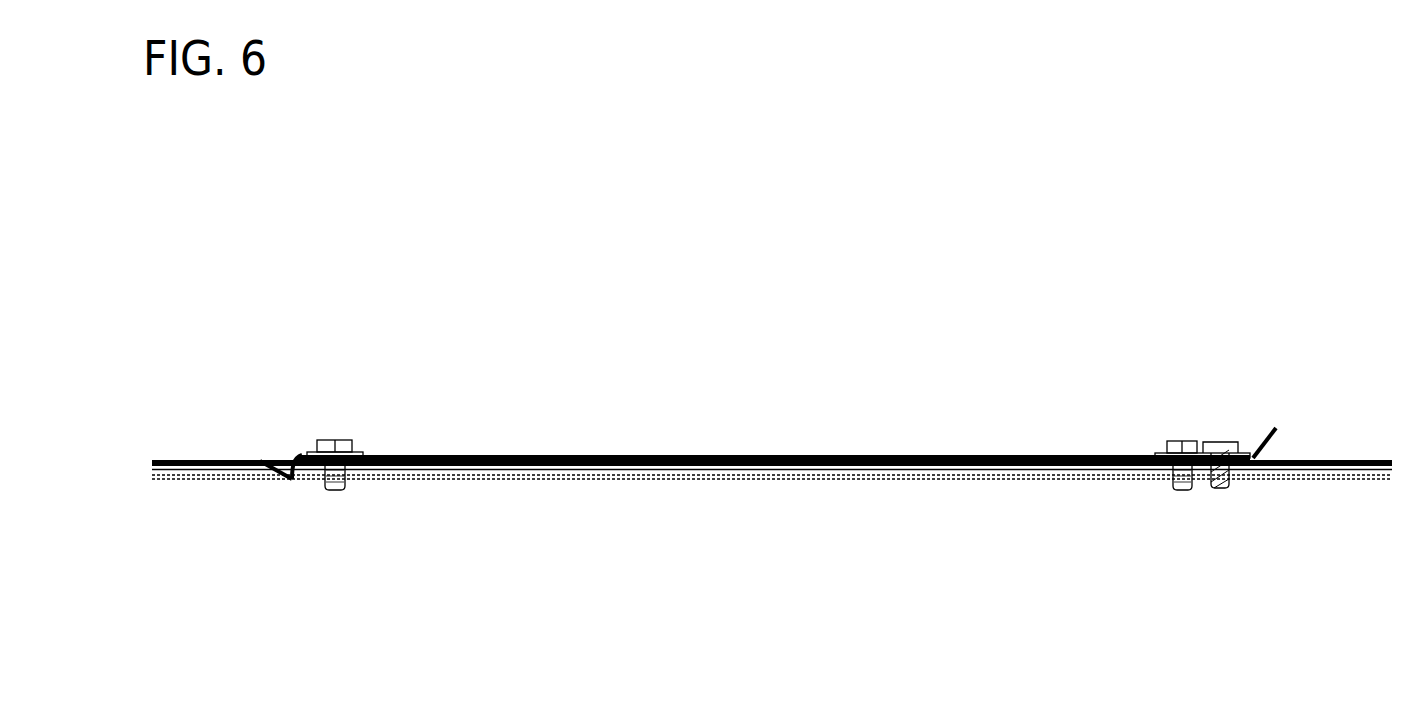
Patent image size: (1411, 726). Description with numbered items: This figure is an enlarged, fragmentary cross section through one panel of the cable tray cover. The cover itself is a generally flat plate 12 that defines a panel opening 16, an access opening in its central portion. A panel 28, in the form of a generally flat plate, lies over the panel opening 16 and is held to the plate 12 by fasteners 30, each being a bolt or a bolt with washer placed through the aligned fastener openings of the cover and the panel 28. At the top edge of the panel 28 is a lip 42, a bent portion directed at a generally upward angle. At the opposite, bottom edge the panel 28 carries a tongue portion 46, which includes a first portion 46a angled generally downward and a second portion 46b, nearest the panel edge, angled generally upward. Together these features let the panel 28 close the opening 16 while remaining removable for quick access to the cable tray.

The flat plate 12 is at (194, 459).
The panel opening 16 is at (778, 487).
The panel 28 is at (1038, 448).
The fastener 30 is at (338, 441).
The lip 42 is at (1278, 437).
The tongue portion 46 is at (248, 532).
The first portion 46a is at (300, 468).
The second portion 46b is at (281, 476).